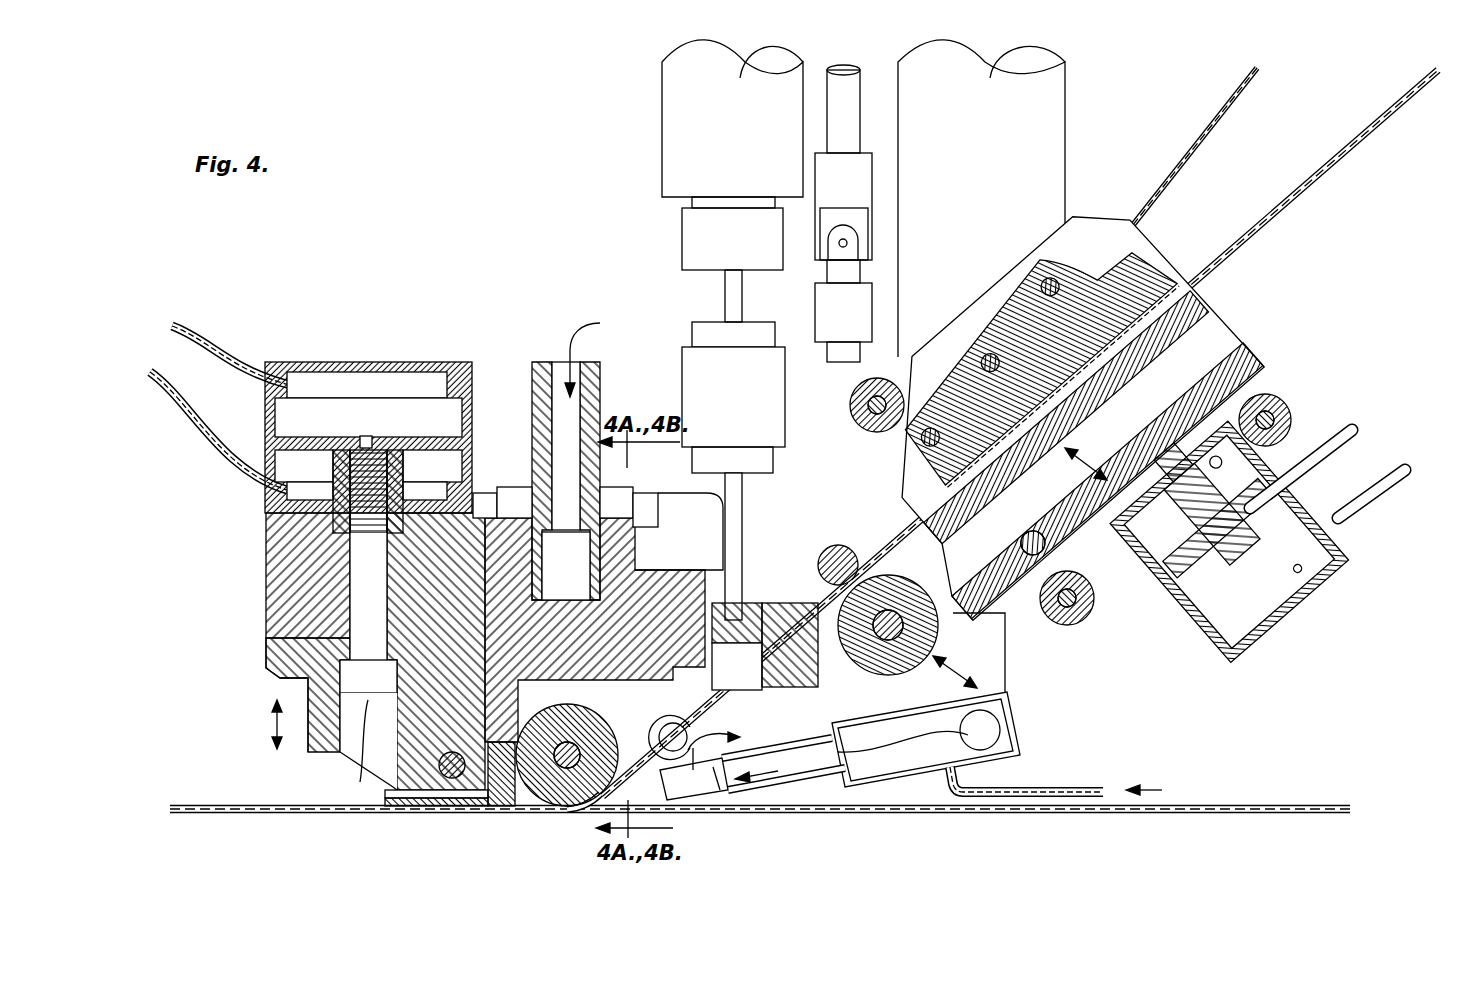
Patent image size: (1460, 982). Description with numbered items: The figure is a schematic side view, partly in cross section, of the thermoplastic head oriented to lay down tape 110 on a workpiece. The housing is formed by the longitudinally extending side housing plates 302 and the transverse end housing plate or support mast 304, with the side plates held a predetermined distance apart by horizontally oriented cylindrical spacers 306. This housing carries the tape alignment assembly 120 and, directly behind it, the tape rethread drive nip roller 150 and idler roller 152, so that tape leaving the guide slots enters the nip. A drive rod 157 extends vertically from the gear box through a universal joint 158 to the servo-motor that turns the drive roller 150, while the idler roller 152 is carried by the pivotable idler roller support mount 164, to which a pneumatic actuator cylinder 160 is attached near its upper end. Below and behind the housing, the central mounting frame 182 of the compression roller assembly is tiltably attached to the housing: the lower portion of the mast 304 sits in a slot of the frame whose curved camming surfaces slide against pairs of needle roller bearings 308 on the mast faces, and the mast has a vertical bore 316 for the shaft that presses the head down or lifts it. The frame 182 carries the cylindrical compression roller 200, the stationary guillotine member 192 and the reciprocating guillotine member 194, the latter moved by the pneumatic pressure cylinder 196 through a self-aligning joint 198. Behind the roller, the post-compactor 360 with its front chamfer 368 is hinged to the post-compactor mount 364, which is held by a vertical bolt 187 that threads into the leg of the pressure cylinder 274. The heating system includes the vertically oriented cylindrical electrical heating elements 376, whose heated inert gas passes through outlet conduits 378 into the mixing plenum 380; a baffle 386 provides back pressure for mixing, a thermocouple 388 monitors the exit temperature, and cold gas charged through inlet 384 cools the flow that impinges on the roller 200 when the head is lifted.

The web 110 is at (236, 800).
The tape alignment assembly 120 is at (1098, 207).
The tape rethread drive nip roller 150 is at (830, 546).
The idler roller 152 is at (878, 676).
The drive rod 157 is at (836, 100).
The universal joint 158 is at (862, 200).
The pneumatic actuator cylinder 160 is at (1300, 607).
The idler roller support mount 164 is at (1088, 516).
The central mounting frame 182 is at (275, 580).
The vertical bolt 187 is at (362, 770).
The stationary guillotine member 192 is at (795, 602).
The reciprocating guillotine member 194 is at (740, 730).
The pneumatic pressure cylinder 196 is at (752, 138).
The self-aligning joint 198 is at (752, 408).
The compression roller 200 is at (590, 718).
The pressure cylinder 274 is at (407, 360).
The side housing plate 302 is at (1222, 350).
The end housing plate (support mast) 304 is at (538, 360).
The cylindrical spacer 306 is at (870, 430).
The needle roller bearing 308 is at (517, 493).
The vertical bore 316 is at (598, 452).
The post-compactor 360 is at (485, 808).
The post-compactor mount 364 is at (270, 670).
The chamfer 368 is at (543, 810).
The electrical heating element 376 is at (989, 145).
The outlet conduit 378 is at (988, 670).
The mixing plenum 380 is at (1008, 702).
The inlet 384 is at (1045, 784).
The baffle 386 is at (736, 800).
The thermocouple 388 is at (700, 800).